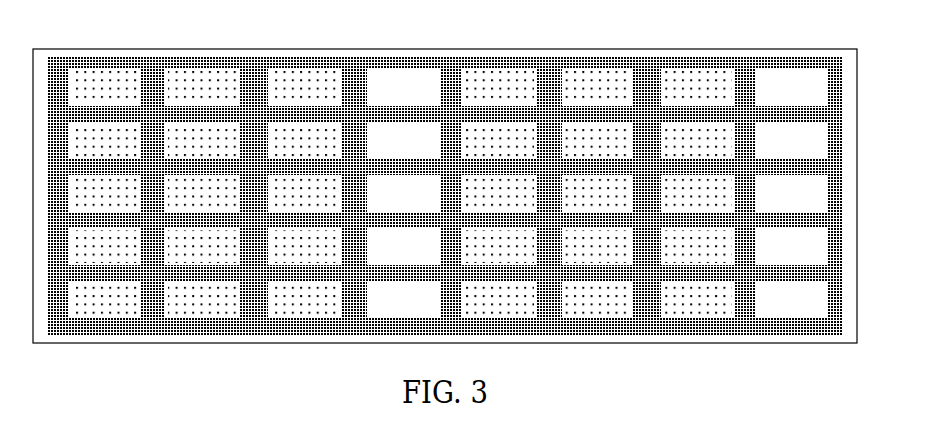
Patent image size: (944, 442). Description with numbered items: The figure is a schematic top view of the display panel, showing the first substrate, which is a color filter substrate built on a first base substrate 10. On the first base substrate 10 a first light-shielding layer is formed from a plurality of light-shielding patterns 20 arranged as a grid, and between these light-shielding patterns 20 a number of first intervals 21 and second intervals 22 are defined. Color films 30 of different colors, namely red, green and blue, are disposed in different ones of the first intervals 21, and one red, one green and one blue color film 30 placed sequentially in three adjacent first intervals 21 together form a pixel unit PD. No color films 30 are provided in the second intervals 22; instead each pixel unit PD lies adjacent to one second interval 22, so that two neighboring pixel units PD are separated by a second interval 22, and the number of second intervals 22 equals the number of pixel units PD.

The first base substrate 10 is at (39, 68).
The light-shielding patterns 20 is at (153, 57).
The color films 30 is at (223, 75).
The first interval 21 is at (308, 80).
The second interval 22 is at (397, 80).
The pixel unit PD is at (555, 57).